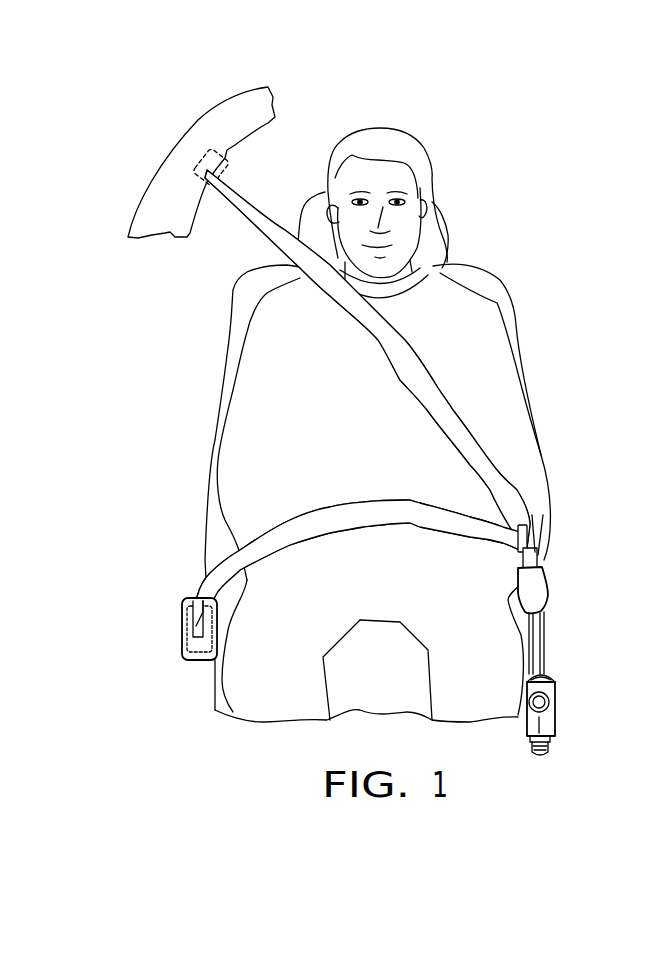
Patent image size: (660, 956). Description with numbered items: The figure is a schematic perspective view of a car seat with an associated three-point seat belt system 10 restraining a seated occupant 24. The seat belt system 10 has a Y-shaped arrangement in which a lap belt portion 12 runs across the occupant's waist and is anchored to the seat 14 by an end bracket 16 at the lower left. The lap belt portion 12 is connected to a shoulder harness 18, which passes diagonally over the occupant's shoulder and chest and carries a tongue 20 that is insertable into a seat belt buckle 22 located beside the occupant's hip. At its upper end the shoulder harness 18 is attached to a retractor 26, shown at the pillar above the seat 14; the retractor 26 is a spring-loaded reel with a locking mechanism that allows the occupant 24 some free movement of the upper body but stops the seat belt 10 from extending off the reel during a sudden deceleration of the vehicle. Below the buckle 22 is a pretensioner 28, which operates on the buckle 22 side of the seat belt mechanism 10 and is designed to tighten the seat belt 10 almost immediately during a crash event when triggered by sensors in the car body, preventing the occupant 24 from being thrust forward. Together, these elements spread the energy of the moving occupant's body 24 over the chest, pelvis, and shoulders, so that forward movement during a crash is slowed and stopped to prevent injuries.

The 3-point seat belt system 10 is at (369, 421).
The lap belt portion 12 is at (362, 502).
The seat 14 is at (230, 343).
The end bracket 16 is at (178, 630).
The shoulder harness 18 is at (400, 387).
The tongue 20 is at (538, 553).
The seat belt buckle 22 is at (547, 592).
The occupant 24 is at (480, 313).
The retractor 26 is at (200, 168).
The pretensioner 28 is at (553, 710).